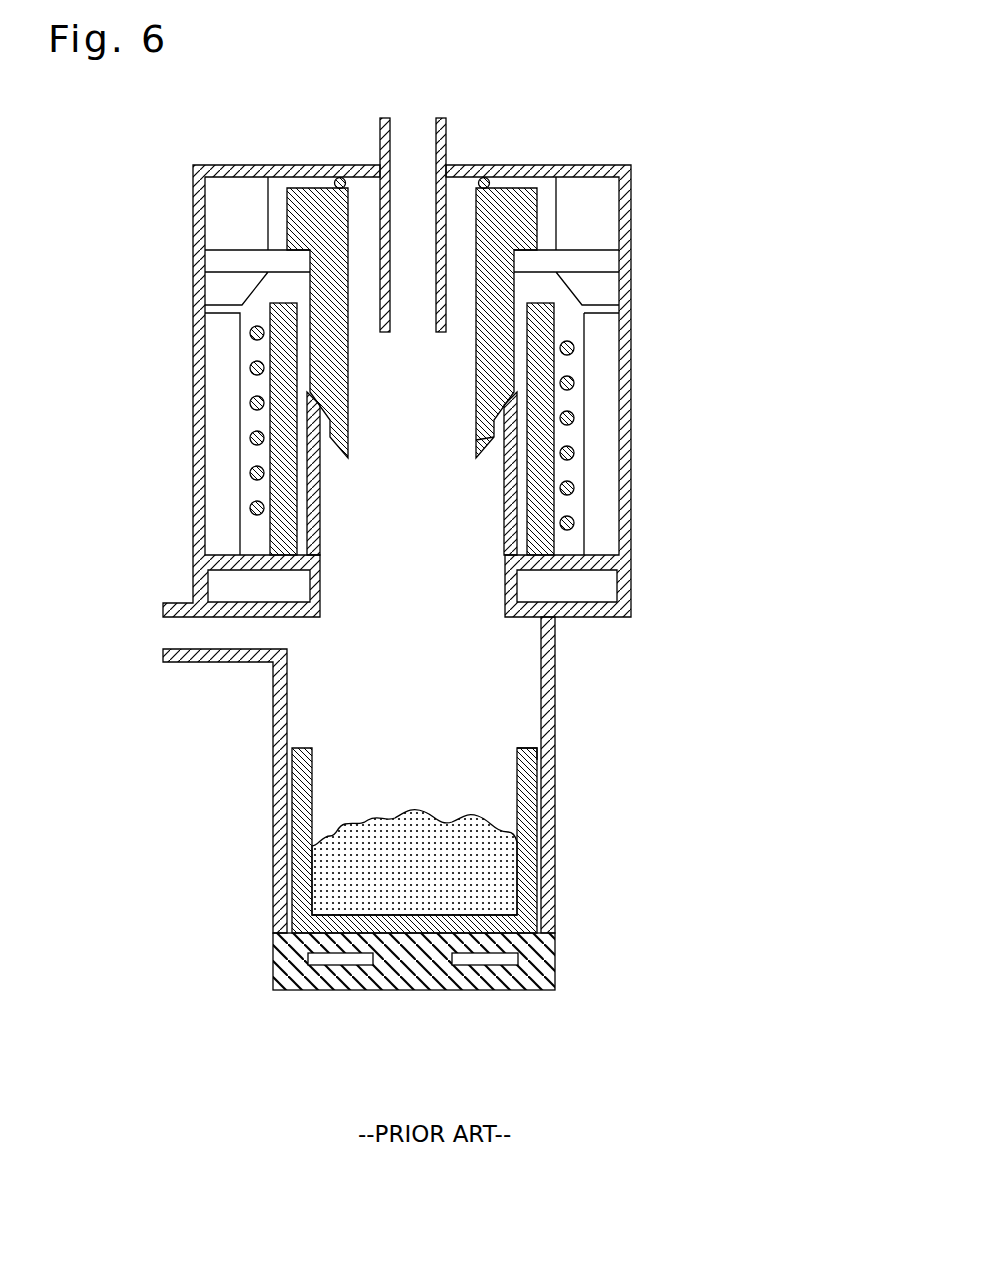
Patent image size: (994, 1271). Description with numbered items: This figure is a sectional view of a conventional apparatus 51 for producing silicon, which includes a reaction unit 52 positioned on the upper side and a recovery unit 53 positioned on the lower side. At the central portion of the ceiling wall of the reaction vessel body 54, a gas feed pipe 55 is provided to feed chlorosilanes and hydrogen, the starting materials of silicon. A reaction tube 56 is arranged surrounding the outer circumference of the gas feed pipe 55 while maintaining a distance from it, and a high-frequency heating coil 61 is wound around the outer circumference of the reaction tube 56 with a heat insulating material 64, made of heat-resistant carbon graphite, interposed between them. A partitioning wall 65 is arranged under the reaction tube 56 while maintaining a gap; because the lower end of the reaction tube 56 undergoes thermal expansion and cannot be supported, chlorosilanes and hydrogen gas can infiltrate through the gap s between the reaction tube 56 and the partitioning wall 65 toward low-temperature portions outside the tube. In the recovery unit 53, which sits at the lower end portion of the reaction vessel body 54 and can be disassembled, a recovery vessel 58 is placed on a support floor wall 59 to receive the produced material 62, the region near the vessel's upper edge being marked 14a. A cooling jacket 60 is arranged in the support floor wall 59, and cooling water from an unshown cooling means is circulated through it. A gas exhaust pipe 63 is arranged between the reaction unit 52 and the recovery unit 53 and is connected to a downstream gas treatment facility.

The apparatus for producing silicon 51 is at (624, 104).
The reaction unit 52 is at (634, 290).
The recovery unit 53 is at (557, 730).
The reaction vessel body 54 is at (632, 483).
The gas feed pipe 55 is at (448, 138).
The reaction tube 56 is at (342, 378).
The gap s is at (508, 390).
The recovery vessel 58 is at (538, 822).
The support floor wall 59 is at (413, 990).
The cooling jacket 60 is at (548, 962).
The high-frequency heating coil 61 is at (570, 383).
The evaporation material 62 is at (412, 820).
The gas exhaust pipe 63 is at (191, 664).
The heat insulating material 64 is at (280, 510).
The partitioning wall 65 is at (320, 483).
The crucible upper edge 14a is at (520, 748).